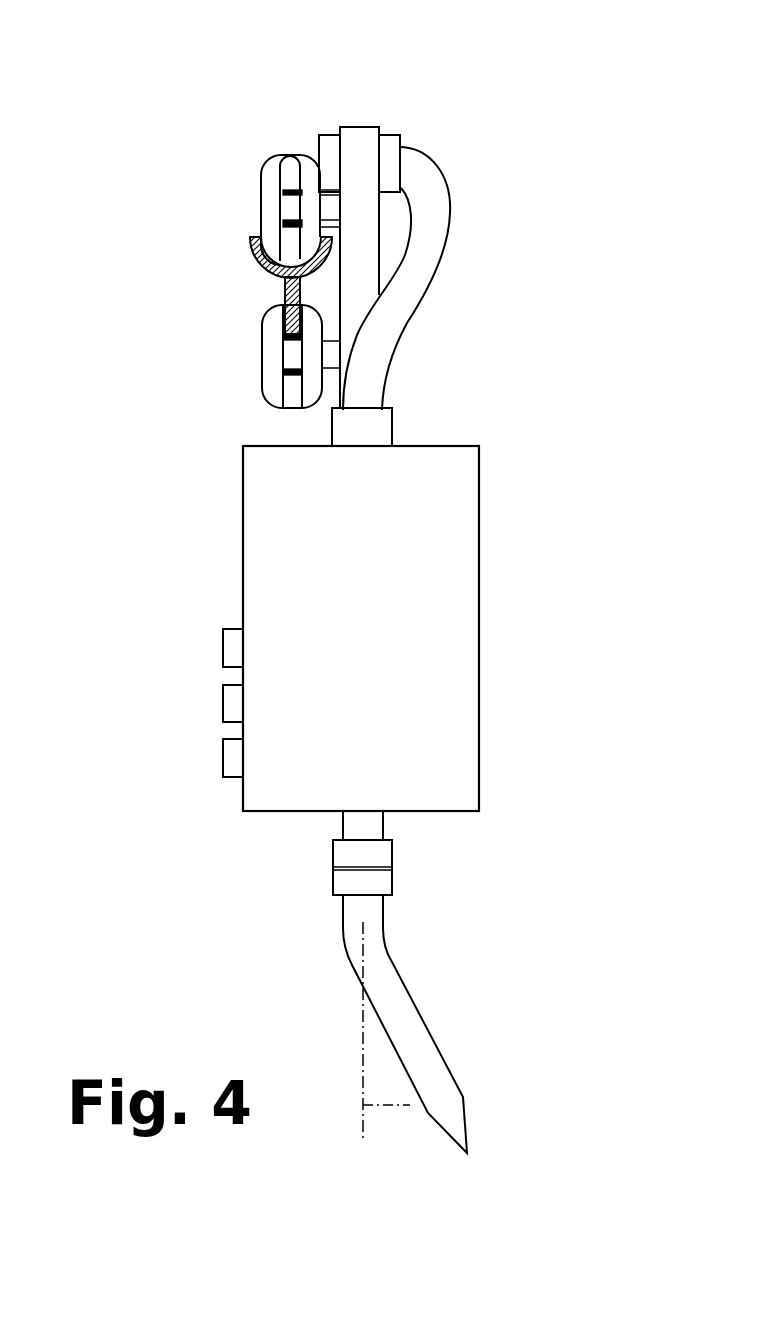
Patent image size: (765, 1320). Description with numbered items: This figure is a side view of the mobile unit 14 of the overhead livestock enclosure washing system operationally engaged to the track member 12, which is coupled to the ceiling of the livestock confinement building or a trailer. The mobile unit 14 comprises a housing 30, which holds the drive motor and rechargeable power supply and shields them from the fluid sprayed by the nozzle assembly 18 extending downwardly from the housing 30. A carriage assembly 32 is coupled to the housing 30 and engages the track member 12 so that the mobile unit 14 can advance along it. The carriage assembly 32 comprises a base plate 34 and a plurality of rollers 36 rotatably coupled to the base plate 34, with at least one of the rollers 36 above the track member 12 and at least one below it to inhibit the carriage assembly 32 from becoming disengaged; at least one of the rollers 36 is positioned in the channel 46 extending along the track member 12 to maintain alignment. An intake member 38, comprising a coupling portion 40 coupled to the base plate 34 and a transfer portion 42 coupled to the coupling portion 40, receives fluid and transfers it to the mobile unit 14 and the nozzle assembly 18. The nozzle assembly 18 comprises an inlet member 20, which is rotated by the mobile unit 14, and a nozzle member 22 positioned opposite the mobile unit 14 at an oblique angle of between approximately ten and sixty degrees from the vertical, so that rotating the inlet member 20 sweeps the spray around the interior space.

The track member 12 is at (190, 258).
The mobile unit 14 is at (495, 650).
The nozzle assembly 18 is at (422, 930).
The inlet member 20 is at (360, 823).
The nozzle member 22 is at (398, 1005).
The housing 30 is at (480, 445).
The carriage assembly 32 is at (360, 107).
The base plate 34 is at (360, 138).
The rollers 36 is at (270, 183).
The intake member 38 is at (450, 210).
The coupling portion 40 is at (310, 153).
The transfer portion 42 is at (392, 318).
The channel 46 is at (290, 263).